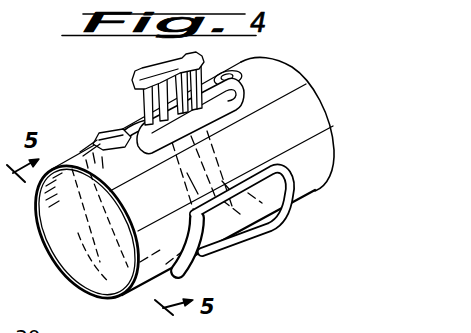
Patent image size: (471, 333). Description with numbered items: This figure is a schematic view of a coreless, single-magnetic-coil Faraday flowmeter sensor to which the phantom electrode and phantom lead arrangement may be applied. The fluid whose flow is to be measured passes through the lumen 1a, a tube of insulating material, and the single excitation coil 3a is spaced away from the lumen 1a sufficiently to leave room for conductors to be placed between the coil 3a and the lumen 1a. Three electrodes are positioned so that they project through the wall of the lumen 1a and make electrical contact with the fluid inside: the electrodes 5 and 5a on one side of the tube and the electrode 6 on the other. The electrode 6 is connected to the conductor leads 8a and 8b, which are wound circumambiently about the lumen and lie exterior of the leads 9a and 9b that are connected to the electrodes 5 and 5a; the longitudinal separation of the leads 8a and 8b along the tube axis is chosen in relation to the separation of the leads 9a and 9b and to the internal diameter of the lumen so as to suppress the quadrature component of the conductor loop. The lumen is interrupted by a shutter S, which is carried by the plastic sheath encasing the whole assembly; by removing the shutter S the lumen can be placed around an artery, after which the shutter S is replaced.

The shutter S is at (313, 99).
The lumen 1a is at (110, 292).
The coil 3a is at (107, 130).
The electrode 5 is at (143, 112).
The electrode 5a is at (198, 77).
The electrode 6 is at (210, 257).
The conductor lead 8a is at (140, 92).
The conductor lead 8b is at (240, 83).
The lead 9a is at (134, 76).
The lead 9b is at (176, 63).